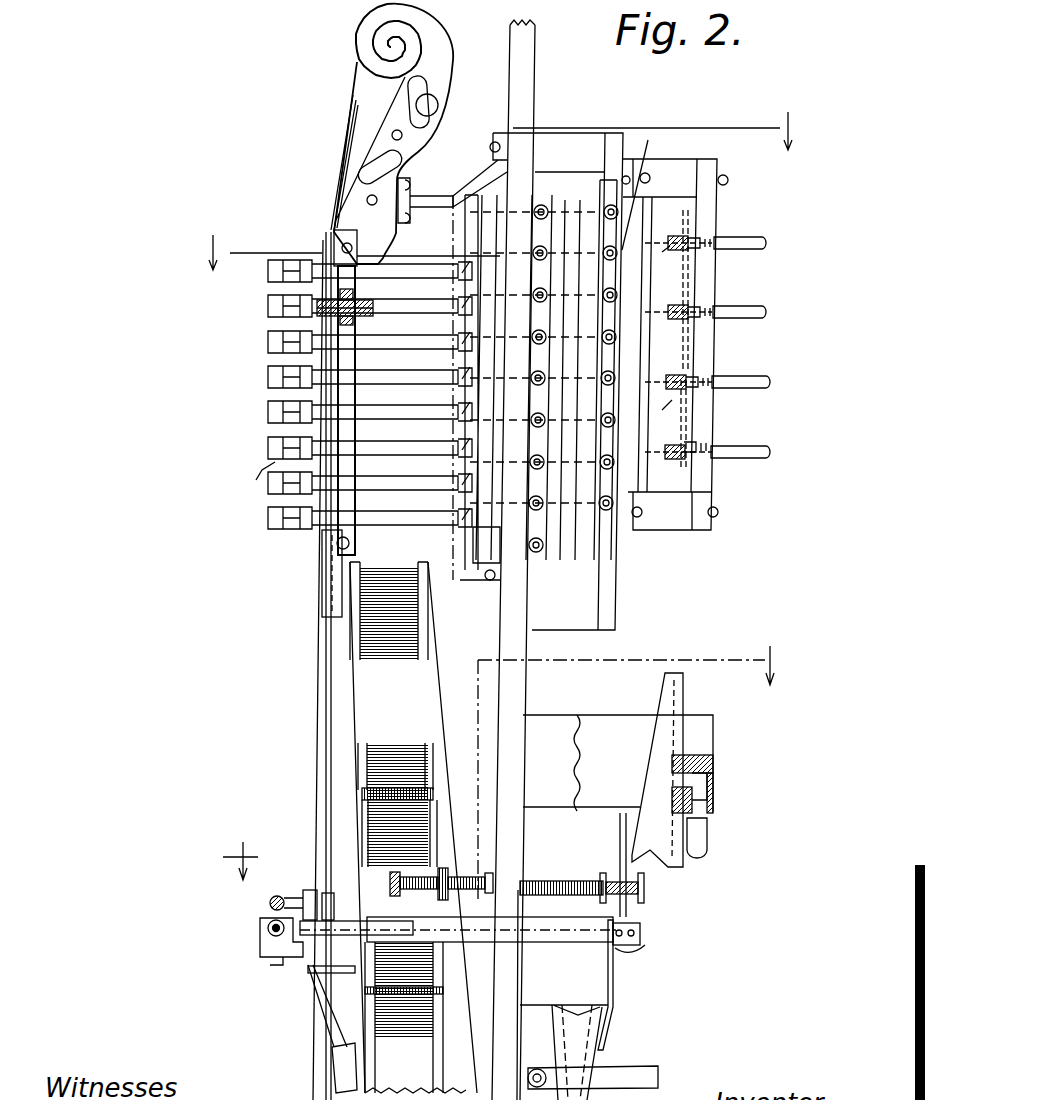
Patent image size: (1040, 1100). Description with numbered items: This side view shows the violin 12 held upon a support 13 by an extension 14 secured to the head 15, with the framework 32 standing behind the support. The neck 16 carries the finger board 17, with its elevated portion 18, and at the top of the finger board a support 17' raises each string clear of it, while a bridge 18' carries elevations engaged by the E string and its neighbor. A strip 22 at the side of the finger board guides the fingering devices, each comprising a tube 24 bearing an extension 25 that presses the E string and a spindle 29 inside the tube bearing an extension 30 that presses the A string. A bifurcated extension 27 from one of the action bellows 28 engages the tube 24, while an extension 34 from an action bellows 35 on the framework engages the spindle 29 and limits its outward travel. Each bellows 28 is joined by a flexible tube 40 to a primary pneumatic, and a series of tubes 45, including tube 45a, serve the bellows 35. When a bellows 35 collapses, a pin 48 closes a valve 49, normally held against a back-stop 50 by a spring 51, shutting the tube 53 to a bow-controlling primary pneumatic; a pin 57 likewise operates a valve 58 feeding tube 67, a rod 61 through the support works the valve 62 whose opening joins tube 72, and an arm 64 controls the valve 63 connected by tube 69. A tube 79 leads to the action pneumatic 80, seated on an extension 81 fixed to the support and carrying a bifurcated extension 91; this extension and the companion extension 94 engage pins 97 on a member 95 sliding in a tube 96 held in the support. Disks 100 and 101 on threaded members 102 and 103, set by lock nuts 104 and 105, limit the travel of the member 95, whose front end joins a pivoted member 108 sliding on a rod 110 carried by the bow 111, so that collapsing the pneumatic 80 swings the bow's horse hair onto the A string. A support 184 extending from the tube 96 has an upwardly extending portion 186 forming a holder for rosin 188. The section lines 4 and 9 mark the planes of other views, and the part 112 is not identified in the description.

The section line 4- 4 is at (495, 189).
The section line 9- 9 is at (503, 761).
The violin 12 is at (415, 692).
The support 13 is at (513, 662).
The extension 14 is at (430, 195).
The head 15 is at (383, 123).
The neck 16 is at (377, 302).
The finger board 17 is at (303, 666).
The support 17' is at (317, 240).
The elevated portion 18 is at (312, 573).
The bridge 18' is at (320, 1029).
The strip 22 is at (338, 464).
The tube 24 is at (417, 320).
The extension 25 is at (300, 310).
The extension 27 is at (463, 379).
The action bellows 28 is at (470, 270).
The spindle 29 is at (282, 380).
The extension 30 is at (275, 447).
The framework 32 is at (697, 522).
The extension 34 is at (550, 470).
The action bellows 35 is at (590, 297).
The flexible tube 40 is at (542, 205).
The tube 45 is at (611, 205).
The tube 45a is at (654, 183).
The pin 48 is at (678, 290).
The valve 49 is at (690, 244).
The back-stop 50 is at (683, 283).
The spring 51 is at (660, 333).
The tube 53 is at (768, 246).
The pin 57 is at (678, 302).
The valve 58 is at (690, 313).
The rod 61 is at (678, 461).
The valve 62 is at (690, 448).
The valve 63 is at (690, 382).
The arm 64 is at (678, 408).
The tube 67 is at (768, 316).
The tube 69 is at (772, 385).
The tube 72 is at (772, 454).
The tube 79 is at (707, 838).
The action pneumatic 80 is at (670, 706).
The extension 81 is at (707, 736).
The bifurcated extension 91 is at (621, 878).
The bifurcated extension 94 is at (612, 988).
The member 95 is at (300, 940).
The tube 96 is at (462, 943).
The pin 97 is at (642, 936).
The disk 100 is at (644, 902).
The disk 101 is at (600, 882).
The threaded member 102 is at (645, 888).
The threaded member 103 is at (542, 896).
The lock nut 104 is at (488, 872).
The lock nut 105 is at (440, 897).
The pivoted member 108 is at (268, 929).
The rod 110 is at (268, 945).
The bow 111 is at (270, 905).
The rod 112 is at (632, 1070).
The support 184 is at (338, 938).
The upwardly extending portion 186 is at (306, 900).
The rosin 188 is at (325, 892).
The A string A is at (326, 797).
The E string E is at (314, 735).